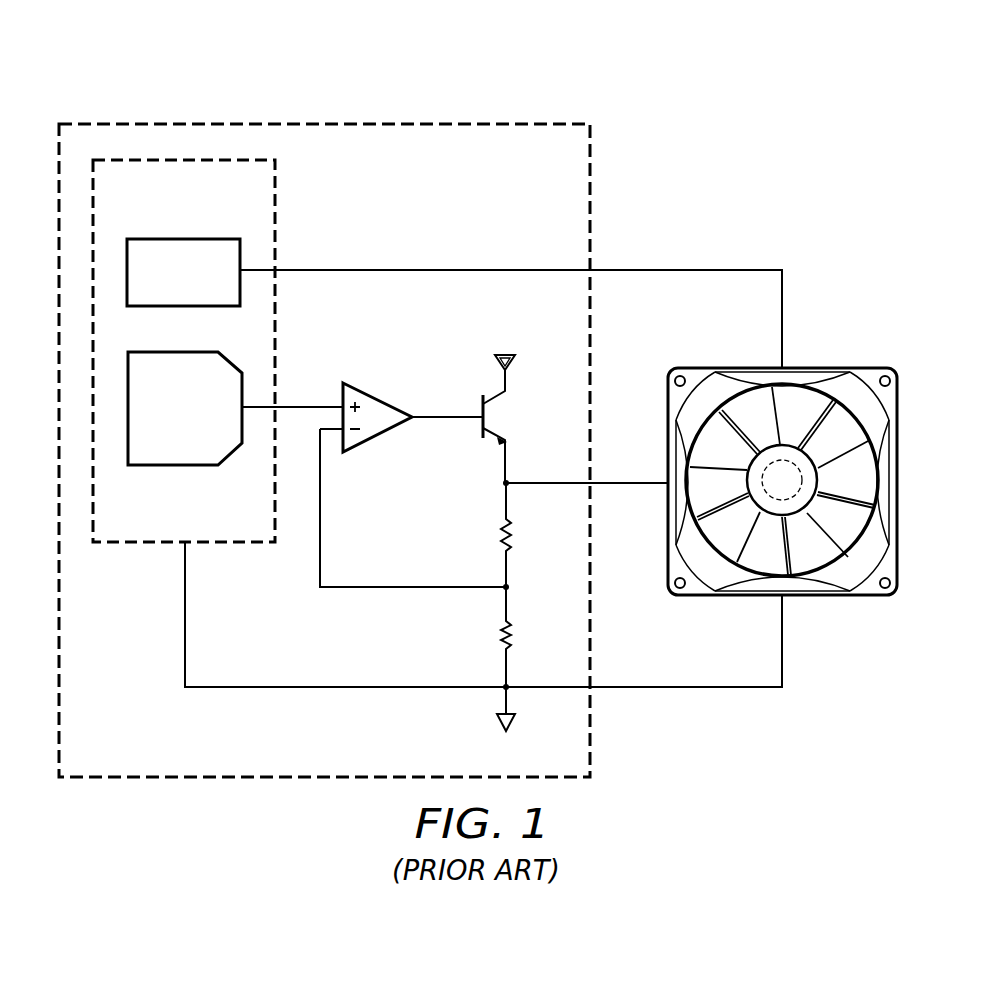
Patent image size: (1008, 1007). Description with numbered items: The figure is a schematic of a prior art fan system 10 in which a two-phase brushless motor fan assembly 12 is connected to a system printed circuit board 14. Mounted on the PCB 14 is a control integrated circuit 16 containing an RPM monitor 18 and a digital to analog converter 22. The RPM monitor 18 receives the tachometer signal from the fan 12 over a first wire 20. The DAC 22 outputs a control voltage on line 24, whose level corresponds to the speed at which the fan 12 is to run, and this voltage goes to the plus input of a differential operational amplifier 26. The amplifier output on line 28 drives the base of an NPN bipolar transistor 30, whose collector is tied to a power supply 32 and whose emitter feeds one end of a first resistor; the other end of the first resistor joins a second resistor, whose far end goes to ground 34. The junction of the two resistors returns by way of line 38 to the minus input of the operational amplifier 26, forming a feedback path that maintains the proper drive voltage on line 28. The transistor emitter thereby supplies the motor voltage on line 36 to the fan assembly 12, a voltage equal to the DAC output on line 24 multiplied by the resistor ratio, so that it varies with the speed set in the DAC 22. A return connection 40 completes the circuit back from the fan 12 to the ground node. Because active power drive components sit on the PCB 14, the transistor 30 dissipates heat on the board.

The system 10 is at (262, 72).
The two-phase brushless motor fan assembly 12 is at (832, 367).
The system printed circuit board 14 is at (424, 227).
The control integrated circuit 16 is at (143, 546).
The RPM monitor 18 is at (185, 237).
The first wire 20 is at (697, 268).
The digital to analog converter 22 is at (199, 442).
The line 24 is at (322, 403).
The differential operational amplifier 26 is at (380, 395).
The line 28 is at (445, 420).
The NPN bipolar transistor 30 is at (480, 397).
The power supply 32 is at (512, 363).
The ground 34 is at (515, 722).
The line 36 is at (618, 481).
The line 38 is at (410, 579).
The return line 40 is at (697, 688).